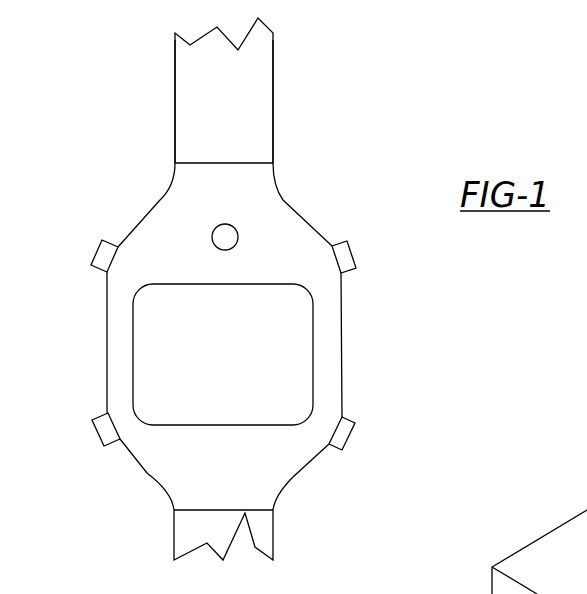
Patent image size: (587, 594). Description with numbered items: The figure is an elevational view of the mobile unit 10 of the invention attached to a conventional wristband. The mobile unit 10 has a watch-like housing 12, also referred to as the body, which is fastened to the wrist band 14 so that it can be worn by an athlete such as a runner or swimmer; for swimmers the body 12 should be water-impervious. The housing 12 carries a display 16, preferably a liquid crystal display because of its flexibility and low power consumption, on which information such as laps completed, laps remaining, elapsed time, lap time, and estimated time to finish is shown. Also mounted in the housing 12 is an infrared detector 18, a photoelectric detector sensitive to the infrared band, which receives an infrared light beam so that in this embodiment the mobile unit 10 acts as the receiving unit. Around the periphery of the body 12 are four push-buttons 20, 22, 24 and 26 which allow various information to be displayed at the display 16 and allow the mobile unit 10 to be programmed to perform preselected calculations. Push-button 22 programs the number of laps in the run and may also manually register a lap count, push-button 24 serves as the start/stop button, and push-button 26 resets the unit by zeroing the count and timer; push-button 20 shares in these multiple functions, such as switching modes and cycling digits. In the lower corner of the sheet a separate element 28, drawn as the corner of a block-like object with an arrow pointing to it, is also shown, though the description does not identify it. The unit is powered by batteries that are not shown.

The mobile unit 10 is at (226, 289).
The housing 12 is at (322, 327).
The wrist band 14 is at (242, 115).
The display 16 is at (190, 387).
The infrared detector 18 is at (225, 236).
The push-button 20 is at (100, 252).
The push-button 22 is at (102, 432).
The push-button 24 is at (352, 438).
The push-button 26 is at (355, 248).
The mounting surface 28 is at (467, 562).